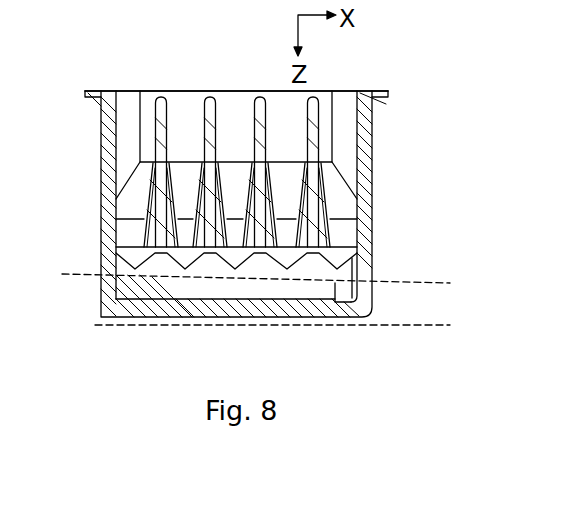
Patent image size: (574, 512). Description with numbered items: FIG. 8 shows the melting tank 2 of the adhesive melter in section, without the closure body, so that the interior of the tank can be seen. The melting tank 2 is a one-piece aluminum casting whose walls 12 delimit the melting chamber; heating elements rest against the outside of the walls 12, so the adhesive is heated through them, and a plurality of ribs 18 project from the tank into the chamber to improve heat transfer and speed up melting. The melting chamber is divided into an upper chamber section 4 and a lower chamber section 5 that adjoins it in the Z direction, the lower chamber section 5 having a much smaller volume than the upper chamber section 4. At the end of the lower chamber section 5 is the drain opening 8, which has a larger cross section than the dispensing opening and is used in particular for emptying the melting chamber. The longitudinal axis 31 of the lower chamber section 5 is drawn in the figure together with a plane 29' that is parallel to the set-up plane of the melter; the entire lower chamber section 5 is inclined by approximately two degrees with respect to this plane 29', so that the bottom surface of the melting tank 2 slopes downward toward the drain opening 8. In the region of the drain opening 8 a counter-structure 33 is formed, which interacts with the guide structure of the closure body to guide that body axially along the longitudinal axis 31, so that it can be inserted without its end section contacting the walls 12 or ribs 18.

The melting tank 2 is at (378, 57).
The upper chamber section 4 is at (78, 89).
The lower chamber section 5 is at (78, 253).
The drain opening 8 is at (380, 266).
The walls 12 is at (361, 148).
The ribs 18 is at (160, 113).
The plane 29' is at (267, 350).
The longitudinal axis 31 is at (300, 283).
The counter-structure 33 is at (352, 286).